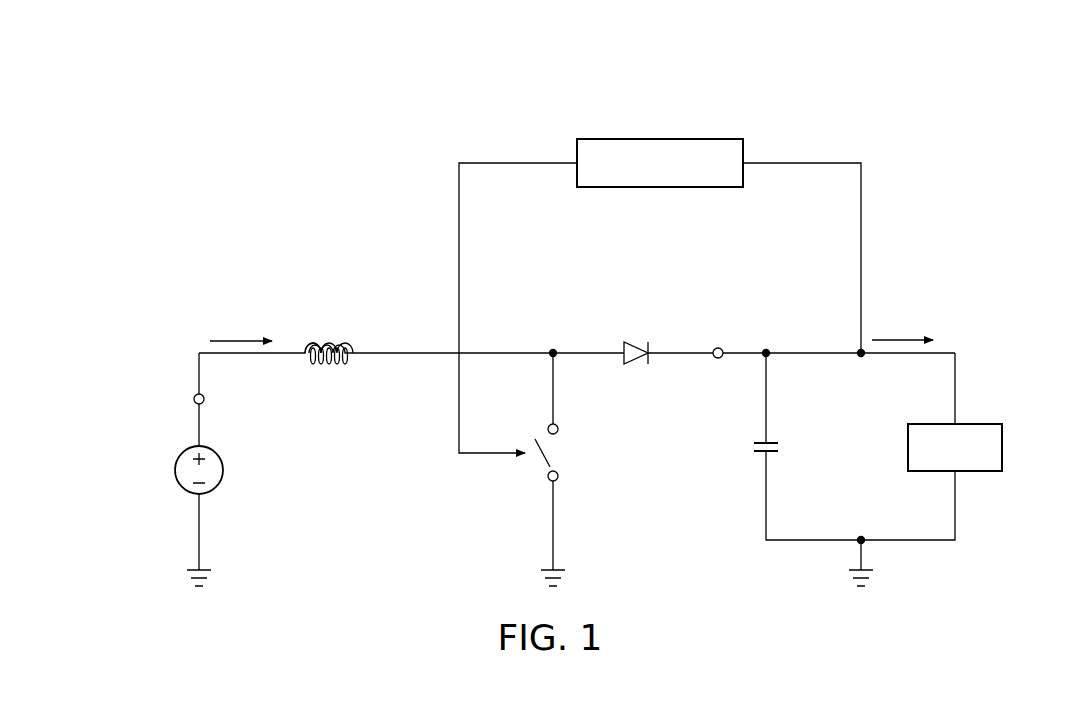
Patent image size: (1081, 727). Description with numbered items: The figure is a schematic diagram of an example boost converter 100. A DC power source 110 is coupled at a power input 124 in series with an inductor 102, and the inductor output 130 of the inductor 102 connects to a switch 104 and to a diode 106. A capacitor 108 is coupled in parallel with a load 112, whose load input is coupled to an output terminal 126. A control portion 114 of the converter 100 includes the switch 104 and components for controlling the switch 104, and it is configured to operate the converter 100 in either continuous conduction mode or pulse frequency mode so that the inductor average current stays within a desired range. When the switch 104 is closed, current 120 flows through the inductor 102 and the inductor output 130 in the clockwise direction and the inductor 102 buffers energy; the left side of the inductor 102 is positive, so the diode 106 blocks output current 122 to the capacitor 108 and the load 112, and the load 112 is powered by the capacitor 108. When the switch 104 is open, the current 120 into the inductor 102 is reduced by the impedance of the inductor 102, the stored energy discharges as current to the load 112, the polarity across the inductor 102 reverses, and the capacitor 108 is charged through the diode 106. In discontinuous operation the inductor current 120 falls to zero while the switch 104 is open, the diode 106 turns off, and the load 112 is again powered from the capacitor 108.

The boost converter 100 is at (465, 108).
The inductor 102 is at (322, 362).
The switch 104 is at (527, 470).
The diode 106 is at (636, 365).
The capacitor 108 is at (753, 445).
The DC power source 110 is at (175, 470).
The load 112 is at (1003, 447).
The control portion 114 is at (661, 139).
The current 120 is at (248, 340).
The output current 122 is at (908, 340).
The power input 124 is at (193, 400).
The output terminal 126 is at (721, 346).
The inductor output 130 is at (553, 344).